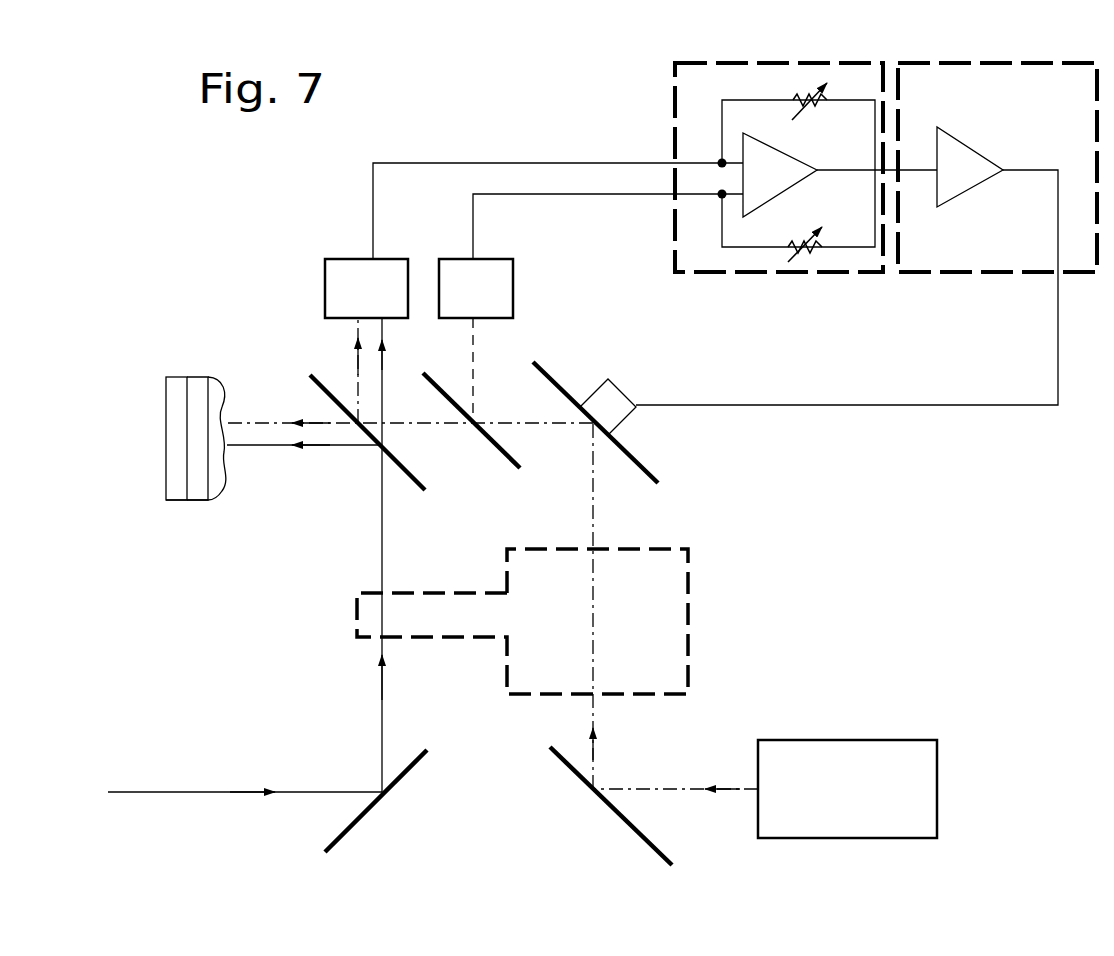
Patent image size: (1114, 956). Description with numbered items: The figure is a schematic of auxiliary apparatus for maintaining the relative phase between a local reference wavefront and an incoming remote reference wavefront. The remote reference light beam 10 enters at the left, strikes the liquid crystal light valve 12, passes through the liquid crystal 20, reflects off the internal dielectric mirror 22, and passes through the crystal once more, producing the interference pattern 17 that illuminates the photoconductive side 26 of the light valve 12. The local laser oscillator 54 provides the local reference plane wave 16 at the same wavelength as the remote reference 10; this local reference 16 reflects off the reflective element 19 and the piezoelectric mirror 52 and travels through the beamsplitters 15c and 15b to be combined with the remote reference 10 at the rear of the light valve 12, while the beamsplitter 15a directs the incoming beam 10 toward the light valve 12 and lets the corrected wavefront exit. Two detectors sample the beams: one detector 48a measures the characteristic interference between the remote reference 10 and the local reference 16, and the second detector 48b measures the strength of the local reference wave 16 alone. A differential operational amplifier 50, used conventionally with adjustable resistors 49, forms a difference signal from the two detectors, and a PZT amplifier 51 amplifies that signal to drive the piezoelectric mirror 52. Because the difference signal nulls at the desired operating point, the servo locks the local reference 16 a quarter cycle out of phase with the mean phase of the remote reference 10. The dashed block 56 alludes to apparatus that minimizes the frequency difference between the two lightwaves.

The remote reference light beam 10 is at (382, 338).
The liquid crystal light valve 12 is at (192, 427).
The beamsplitter 15a is at (358, 820).
The beamsplitter 15b is at (425, 487).
The beamsplitter 15c is at (505, 463).
The local reference plane wave 16 is at (358, 345).
The interference pattern 17 is at (222, 480).
The reflective element 19 is at (660, 855).
The liquid crystal 20 is at (166, 385).
The internal dielectric mirror 22 is at (187, 500).
The photoconductive side 26 is at (197, 377).
The detector 48a is at (325, 259).
The detector 48b is at (513, 259).
The adjustable resistors 49 is at (804, 172).
The differential operational amplifier 50 is at (806, 149).
The PZT amplifier 51 is at (940, 63).
The piezoelectric mirror 52 is at (636, 407).
The local laser oscillator 54 is at (790, 740).
The frequency tracking apparatus block 56 is at (688, 592).